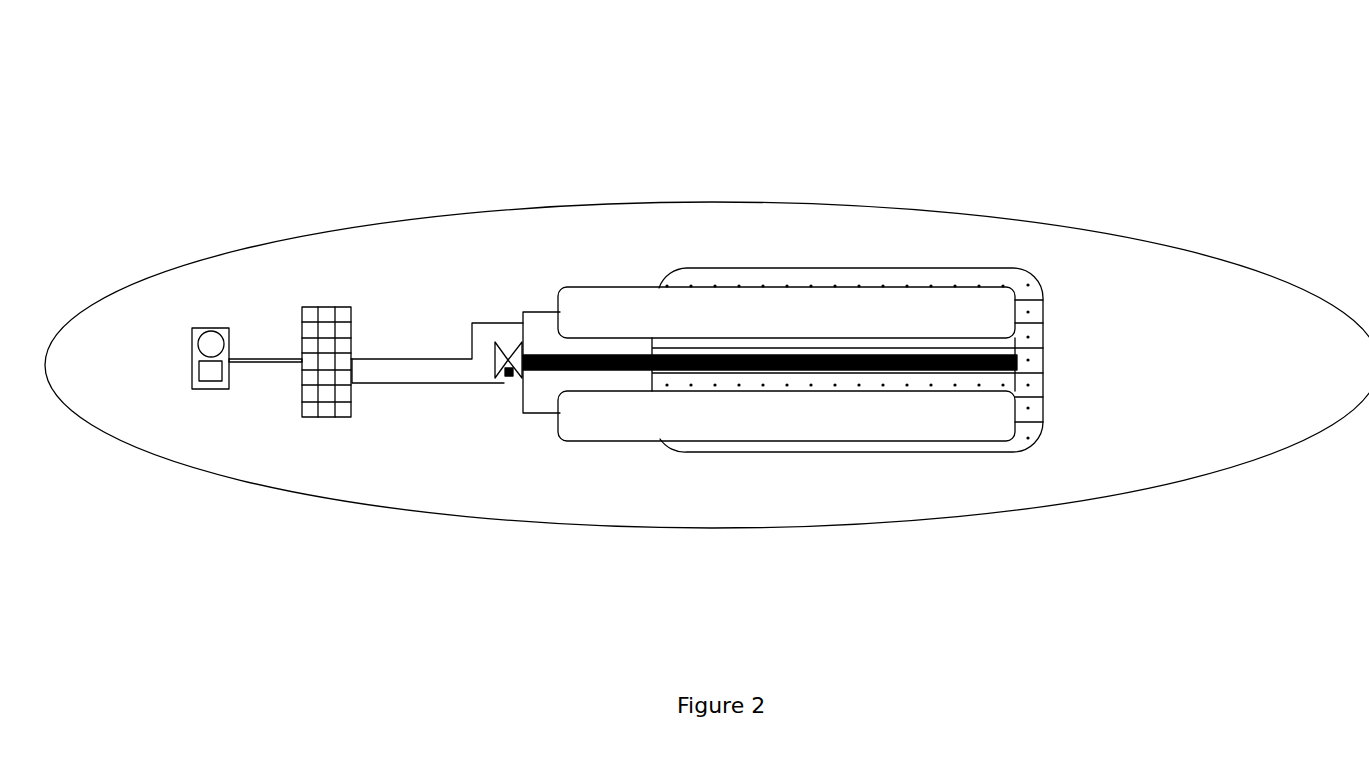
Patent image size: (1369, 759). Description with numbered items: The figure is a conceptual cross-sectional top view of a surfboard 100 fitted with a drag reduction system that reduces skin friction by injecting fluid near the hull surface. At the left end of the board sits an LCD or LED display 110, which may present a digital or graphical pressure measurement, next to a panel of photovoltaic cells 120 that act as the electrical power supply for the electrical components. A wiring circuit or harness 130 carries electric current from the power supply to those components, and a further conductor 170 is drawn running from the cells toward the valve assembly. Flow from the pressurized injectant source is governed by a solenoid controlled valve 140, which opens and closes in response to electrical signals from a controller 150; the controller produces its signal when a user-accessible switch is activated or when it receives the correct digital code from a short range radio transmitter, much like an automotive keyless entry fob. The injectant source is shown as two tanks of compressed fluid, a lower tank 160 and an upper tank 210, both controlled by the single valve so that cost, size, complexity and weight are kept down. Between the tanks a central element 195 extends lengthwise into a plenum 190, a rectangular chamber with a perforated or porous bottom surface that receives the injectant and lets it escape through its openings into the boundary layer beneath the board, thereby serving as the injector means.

The surfboard 100 is at (1175, 387).
The LCD or LED display 110 is at (227, 328).
The photovoltaic cells 120 is at (325, 309).
The wiring circuit or harness 130 is at (423, 358).
The solenoid controlled valve 140 is at (509, 370).
The controller 150 is at (505, 384).
The tank containing pressurized fluid injectant 160 is at (702, 407).
The return conduit 170 is at (443, 383).
The plenum 190 is at (873, 277).
The heating rod 195 is at (1007, 357).
The tank 210 is at (592, 312).